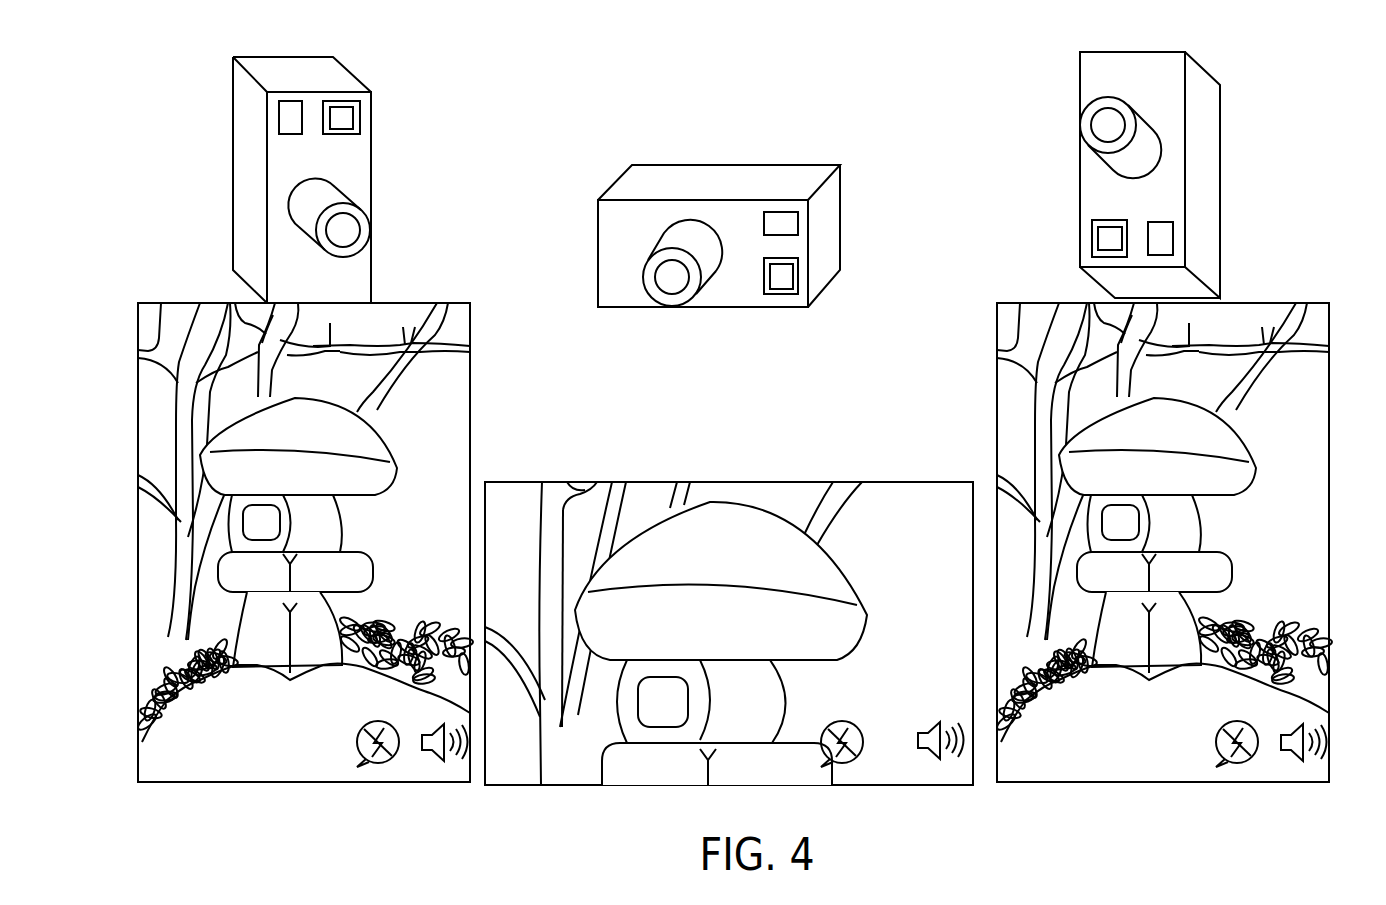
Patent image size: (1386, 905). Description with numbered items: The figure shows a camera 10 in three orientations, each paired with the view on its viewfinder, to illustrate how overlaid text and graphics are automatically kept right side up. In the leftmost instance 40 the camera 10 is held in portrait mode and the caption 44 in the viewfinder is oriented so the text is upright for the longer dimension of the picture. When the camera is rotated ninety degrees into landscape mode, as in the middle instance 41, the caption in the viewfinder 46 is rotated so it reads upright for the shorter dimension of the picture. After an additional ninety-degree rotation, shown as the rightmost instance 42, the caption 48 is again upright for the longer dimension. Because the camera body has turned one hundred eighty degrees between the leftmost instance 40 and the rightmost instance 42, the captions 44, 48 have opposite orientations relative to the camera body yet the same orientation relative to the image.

The camera 10 is at (232, 175).
The leftmost instance 40 is at (278, 562).
The middle instance 41 is at (729, 625).
The rightmost instance 42 is at (1184, 561).
The caption 44 is at (155, 752).
The caption in the viewfinder 46 is at (545, 748).
The caption 48 is at (1154, 770).